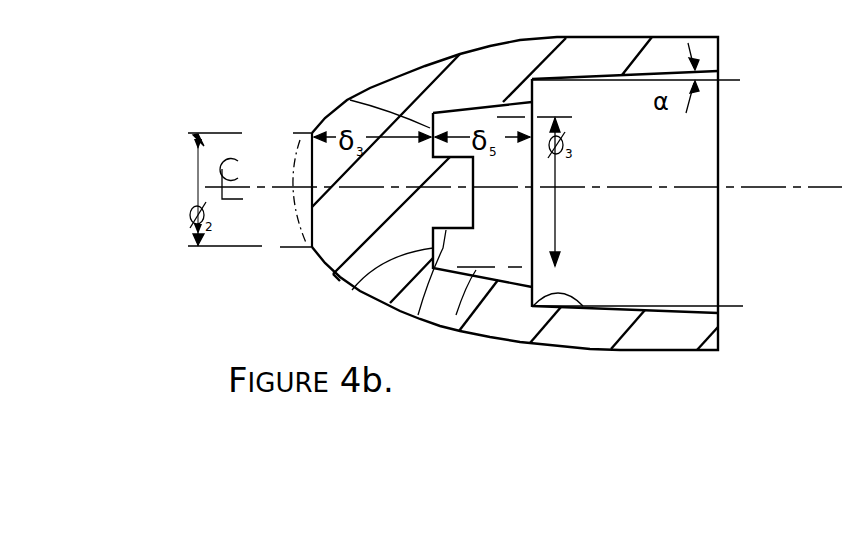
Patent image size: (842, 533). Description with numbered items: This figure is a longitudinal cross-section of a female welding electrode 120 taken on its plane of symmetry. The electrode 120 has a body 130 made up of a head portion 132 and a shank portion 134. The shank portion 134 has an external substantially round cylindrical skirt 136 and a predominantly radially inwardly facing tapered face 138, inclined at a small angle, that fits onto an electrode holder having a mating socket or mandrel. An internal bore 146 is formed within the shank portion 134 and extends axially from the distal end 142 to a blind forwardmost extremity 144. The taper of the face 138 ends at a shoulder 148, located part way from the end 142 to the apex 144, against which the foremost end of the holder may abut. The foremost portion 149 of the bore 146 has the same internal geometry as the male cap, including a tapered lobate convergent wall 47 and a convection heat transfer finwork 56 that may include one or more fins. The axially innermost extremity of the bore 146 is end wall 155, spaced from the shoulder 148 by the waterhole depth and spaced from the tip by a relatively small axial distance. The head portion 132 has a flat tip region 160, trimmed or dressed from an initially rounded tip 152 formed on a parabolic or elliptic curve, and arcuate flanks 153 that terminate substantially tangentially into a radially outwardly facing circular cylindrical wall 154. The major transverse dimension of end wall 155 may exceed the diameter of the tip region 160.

The female electrode 120 is at (307, 60).
The body 130 is at (492, 62).
The head portion 132 is at (397, 87).
The shank portion 134 is at (587, 50).
The skirt 136 is at (673, 45).
The tapered face 138 is at (683, 303).
The distal end 142 is at (718, 330).
The blind forwardmost extremity 144 is at (350, 100).
The internal bore 146 is at (731, 147).
The shoulder 148 is at (583, 310).
The foremost portion 149 is at (497, 251).
The rounded tip 152 is at (290, 157).
The arcuate flanks 153 is at (334, 278).
The circular cylindrical wall 154 is at (610, 348).
The end wall 155 is at (352, 290).
The tip region 160 is at (303, 233).
The finwork 56 is at (418, 315).
The tapered lobate convergent wall 47 is at (456, 315).